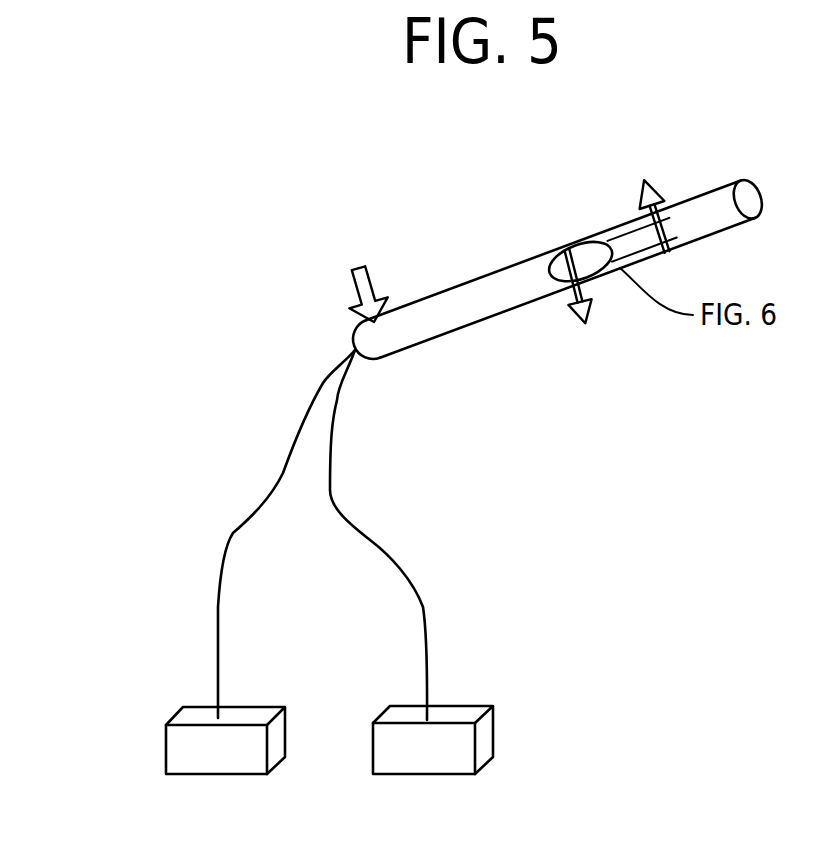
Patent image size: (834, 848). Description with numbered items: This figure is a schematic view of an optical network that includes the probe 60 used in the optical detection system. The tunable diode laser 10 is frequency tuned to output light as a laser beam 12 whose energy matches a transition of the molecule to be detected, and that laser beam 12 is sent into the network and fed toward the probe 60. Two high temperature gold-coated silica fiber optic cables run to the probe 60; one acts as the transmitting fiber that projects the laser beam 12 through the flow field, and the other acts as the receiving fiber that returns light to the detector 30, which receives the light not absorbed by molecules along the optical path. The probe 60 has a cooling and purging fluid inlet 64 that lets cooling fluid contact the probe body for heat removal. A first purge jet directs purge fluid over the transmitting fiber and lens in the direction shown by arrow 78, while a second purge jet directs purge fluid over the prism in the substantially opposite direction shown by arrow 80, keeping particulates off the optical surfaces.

The tunable diode laser 10 is at (191, 706).
The laser beam 12 is at (622, 225).
The detector 30 is at (462, 705).
The probe 60 is at (723, 186).
The cooling and purging fluid inlet 64 is at (380, 272).
The arrow (first direction) 78 is at (573, 300).
The arrow (second direction) 80 is at (677, 204).